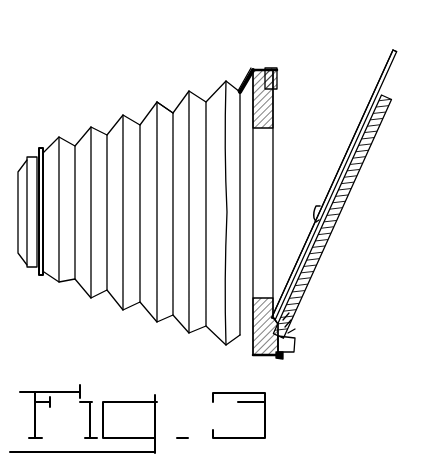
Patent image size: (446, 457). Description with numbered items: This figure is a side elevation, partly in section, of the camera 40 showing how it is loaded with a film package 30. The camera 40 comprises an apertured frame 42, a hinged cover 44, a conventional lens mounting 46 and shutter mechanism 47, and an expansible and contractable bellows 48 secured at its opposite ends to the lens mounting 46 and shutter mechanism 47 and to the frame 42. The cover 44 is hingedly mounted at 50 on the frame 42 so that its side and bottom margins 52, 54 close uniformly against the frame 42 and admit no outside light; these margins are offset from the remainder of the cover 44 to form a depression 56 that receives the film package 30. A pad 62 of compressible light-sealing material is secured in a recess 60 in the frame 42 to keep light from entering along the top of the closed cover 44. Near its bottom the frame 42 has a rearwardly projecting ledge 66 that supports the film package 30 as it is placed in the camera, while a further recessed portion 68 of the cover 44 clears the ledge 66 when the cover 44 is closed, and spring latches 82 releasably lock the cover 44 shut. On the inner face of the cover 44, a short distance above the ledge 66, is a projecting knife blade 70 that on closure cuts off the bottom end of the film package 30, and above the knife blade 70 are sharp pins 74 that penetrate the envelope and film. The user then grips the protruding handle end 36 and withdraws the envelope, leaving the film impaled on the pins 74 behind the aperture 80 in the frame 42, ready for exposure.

The film package 30 is at (345, 170).
The handle end 36 is at (385, 82).
The camera 40 is at (142, 207).
The apertured frame 42 is at (274, 110).
The hinged cover 44 is at (317, 263).
The lens mounting 46 is at (28, 150).
The shutter mechanism 47 is at (47, 146).
The bellows 48 is at (157, 102).
The hinge 50 is at (283, 357).
The side margins 52 is at (303, 255).
The bottom margin 54 is at (272, 357).
The depression 56 is at (333, 195).
The recess 60 is at (267, 69).
The pad 62 is at (271, 67).
The ledge 66 is at (294, 330).
The recessed portion 68 is at (298, 342).
The knife blade 70 is at (290, 323).
The pins 74 is at (288, 312).
The aperture 80 is at (263, 146).
The spring latches 82 is at (313, 207).